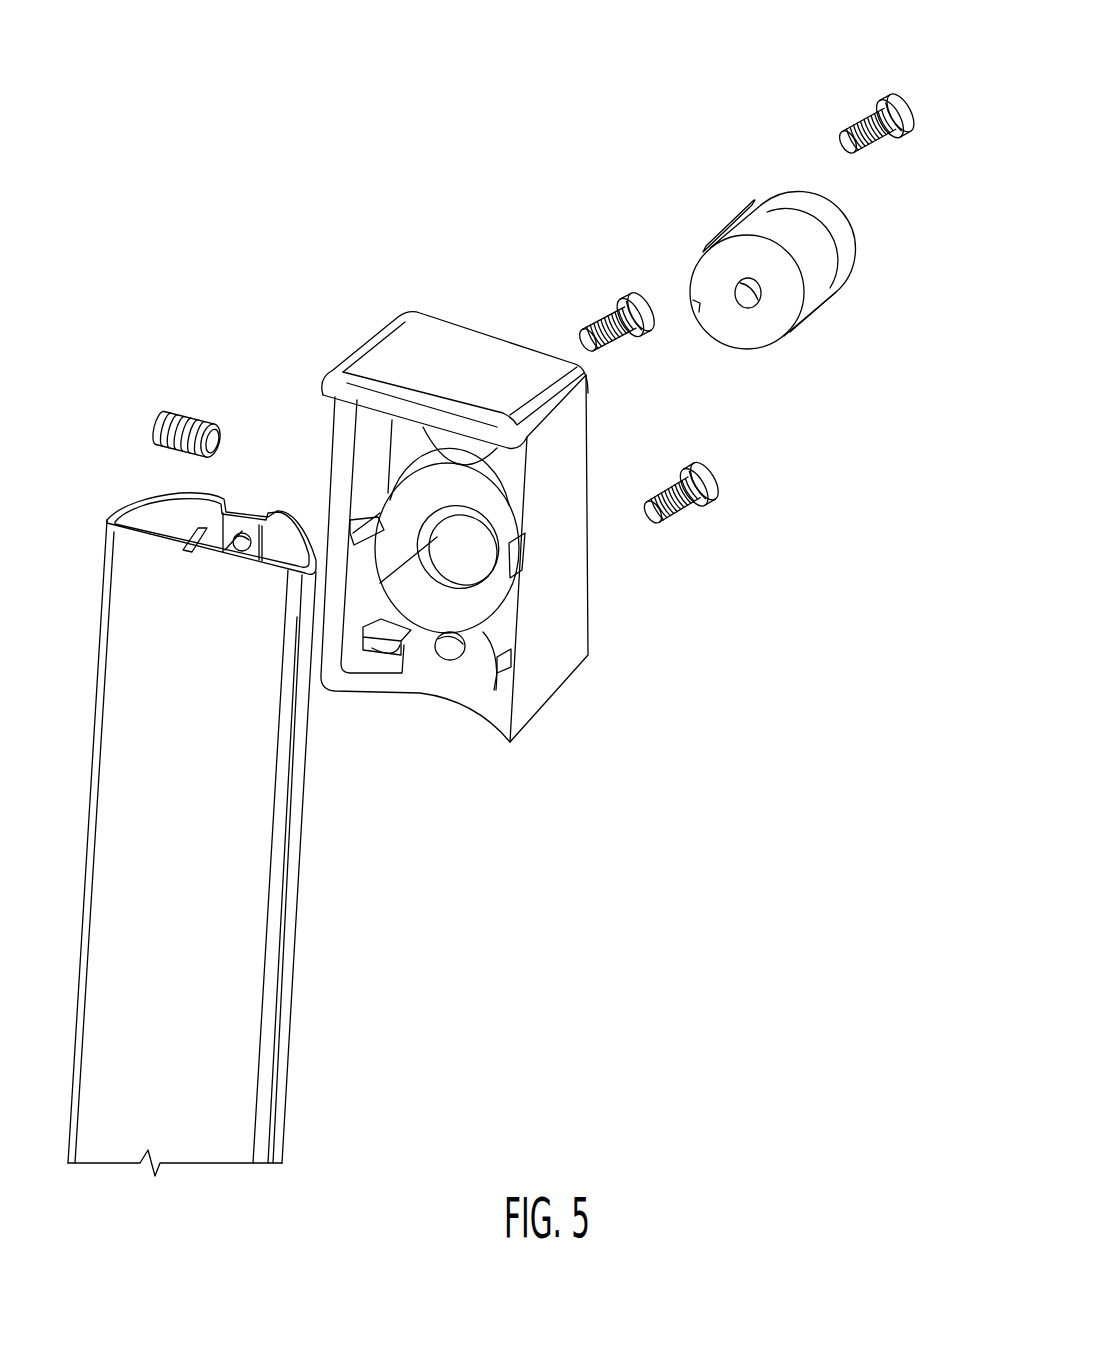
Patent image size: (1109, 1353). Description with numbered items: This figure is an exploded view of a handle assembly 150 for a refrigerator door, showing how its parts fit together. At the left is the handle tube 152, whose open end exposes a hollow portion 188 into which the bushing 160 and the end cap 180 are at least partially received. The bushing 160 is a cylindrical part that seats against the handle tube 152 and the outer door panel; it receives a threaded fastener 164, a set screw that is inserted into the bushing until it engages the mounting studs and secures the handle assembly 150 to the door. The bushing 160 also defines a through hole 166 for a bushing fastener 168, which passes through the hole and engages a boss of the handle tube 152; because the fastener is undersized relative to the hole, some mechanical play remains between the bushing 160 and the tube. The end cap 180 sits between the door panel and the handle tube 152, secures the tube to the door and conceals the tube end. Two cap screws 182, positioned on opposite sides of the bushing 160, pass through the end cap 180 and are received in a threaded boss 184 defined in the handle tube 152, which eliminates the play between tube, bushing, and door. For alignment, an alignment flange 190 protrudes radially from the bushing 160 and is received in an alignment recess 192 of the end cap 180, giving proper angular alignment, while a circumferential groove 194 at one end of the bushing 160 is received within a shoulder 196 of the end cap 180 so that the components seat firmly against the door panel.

The handle assembly 150 is at (262, 196).
The handle tube 152 is at (292, 985).
The bushing 160 is at (823, 313).
The threaded fastener 164 is at (191, 420).
The through hole 166 is at (749, 314).
The bushing fastener 168 is at (905, 115).
The end cap 180 is at (573, 648).
The cap screws 182 is at (613, 300).
The threaded boss 184 is at (242, 533).
The hollow portion 188 is at (158, 513).
The alignment flange 190 is at (690, 260).
The alignment recess 192 is at (403, 540).
The circumferential groove 194 is at (866, 266).
The shoulder 196 is at (437, 530).